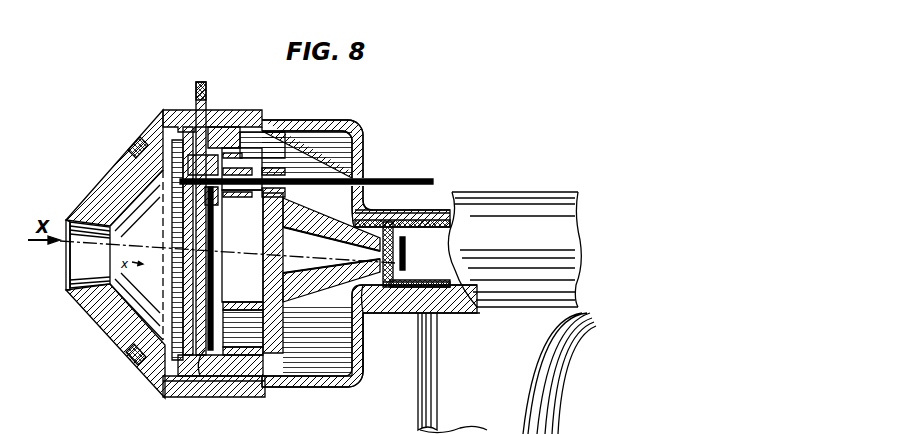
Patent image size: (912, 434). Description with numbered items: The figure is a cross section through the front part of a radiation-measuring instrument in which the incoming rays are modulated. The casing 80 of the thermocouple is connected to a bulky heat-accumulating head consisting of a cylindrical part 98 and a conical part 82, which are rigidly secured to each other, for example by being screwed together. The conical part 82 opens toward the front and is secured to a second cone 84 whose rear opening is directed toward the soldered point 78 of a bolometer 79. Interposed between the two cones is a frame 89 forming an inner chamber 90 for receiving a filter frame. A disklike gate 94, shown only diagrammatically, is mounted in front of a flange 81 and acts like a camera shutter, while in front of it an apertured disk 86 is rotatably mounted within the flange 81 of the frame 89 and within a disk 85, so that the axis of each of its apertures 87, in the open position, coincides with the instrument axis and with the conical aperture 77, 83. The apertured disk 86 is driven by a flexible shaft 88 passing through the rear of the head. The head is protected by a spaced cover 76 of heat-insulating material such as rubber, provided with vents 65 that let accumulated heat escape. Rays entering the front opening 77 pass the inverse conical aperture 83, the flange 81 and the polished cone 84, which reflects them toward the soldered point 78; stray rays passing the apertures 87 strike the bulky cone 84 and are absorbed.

The vents 65 is at (134, 147).
The cover 76 is at (101, 179).
The front opening 77 is at (67, 268).
The soldered point 78 is at (393, 252).
The bolometer 79 is at (437, 222).
The casing 80 is at (514, 240).
The flange 81 is at (231, 389).
The conical part 82 is at (97, 292).
The inverse conical aperture 83 is at (70, 283).
The second cone 84 is at (370, 283).
The disk 85 is at (163, 380).
The apertured disk 86 is at (197, 84).
The apertures 87 is at (206, 112).
The flexible shaft 88 is at (413, 177).
The frame 89 is at (240, 302).
The inner chamber 90 is at (293, 302).
The disklike gate 94 is at (212, 388).
The cylindrical part 98 is at (312, 122).